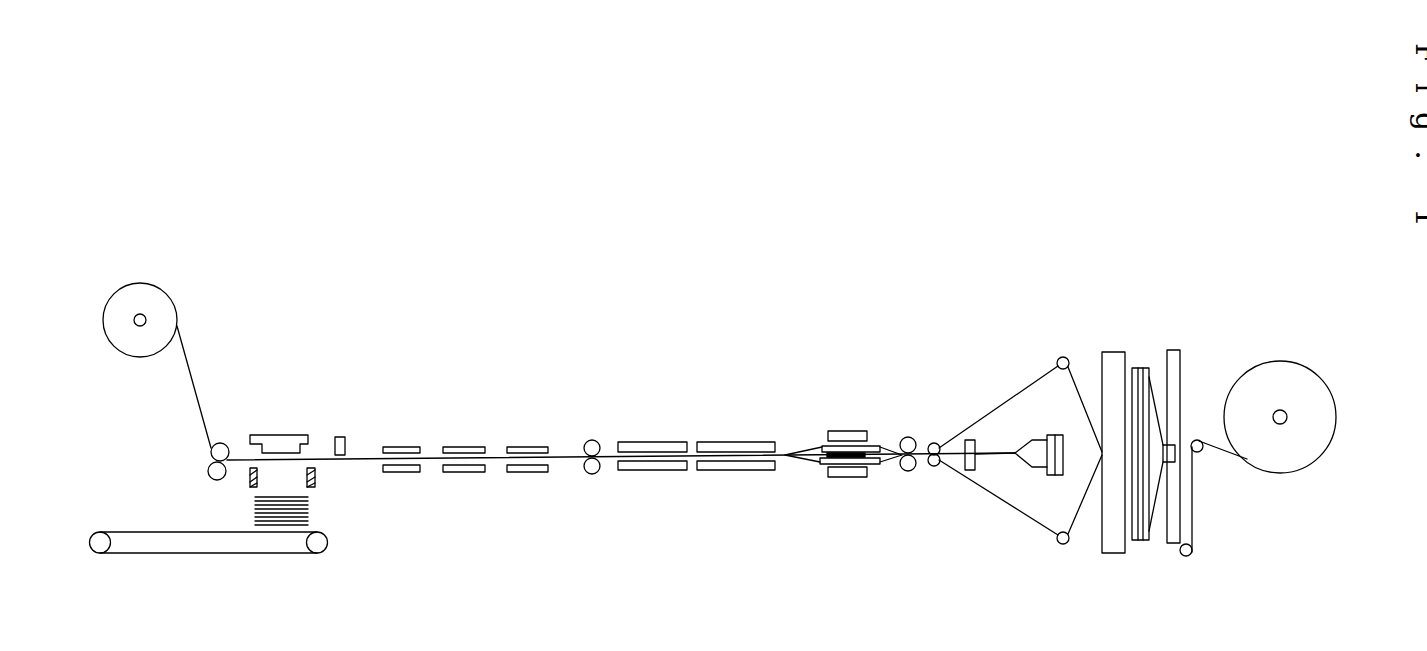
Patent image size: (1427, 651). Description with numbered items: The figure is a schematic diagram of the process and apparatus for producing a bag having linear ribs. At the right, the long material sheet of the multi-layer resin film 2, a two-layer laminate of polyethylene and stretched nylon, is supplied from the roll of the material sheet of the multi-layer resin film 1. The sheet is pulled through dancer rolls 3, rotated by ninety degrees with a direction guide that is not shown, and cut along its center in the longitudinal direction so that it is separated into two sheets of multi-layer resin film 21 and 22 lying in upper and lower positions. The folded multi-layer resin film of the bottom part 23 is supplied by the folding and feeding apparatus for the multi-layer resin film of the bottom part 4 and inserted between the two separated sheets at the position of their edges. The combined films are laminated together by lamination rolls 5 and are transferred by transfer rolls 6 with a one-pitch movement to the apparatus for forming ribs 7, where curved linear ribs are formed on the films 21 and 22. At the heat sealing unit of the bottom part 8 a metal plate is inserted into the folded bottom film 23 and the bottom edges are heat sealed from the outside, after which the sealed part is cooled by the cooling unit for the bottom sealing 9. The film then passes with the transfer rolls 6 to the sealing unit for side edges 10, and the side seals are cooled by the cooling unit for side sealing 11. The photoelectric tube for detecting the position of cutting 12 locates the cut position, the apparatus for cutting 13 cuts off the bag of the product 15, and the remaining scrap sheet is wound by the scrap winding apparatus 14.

The roll of the material sheet of the multi-layer resin film 1 is at (1270, 378).
The material sheet of the multi-layer resin film 2 is at (1218, 453).
The dancer rolls 3 is at (1146, 314).
The folding and feeding apparatus for the multi-layer resin film of the bottom part 4 is at (1050, 433).
The lamination rolls 5 is at (935, 443).
The transfer rolls 6 is at (592, 440).
The apparatus for forming ribs 7 is at (840, 478).
The heat sealing unit of the bottom part 8 is at (737, 442).
The cooling unit for the bottom sealing 9 is at (655, 442).
The sealing unit for side edges 10 is at (522, 446).
The cooling unit for side sealing 11 is at (402, 447).
The photoelectric tube for detecting the position of cutting 12 is at (340, 437).
The apparatus for cutting 13 is at (280, 435).
The scrap winding apparatus 14 is at (152, 296).
The bag of the product 15 is at (308, 510).
The multi-layer resin film (upper sheet) 21 is at (1032, 381).
The multi-layer resin film (lower sheet) 22 is at (1022, 518).
The folded multi-layer resin film of the bottom part 23 is at (993, 455).